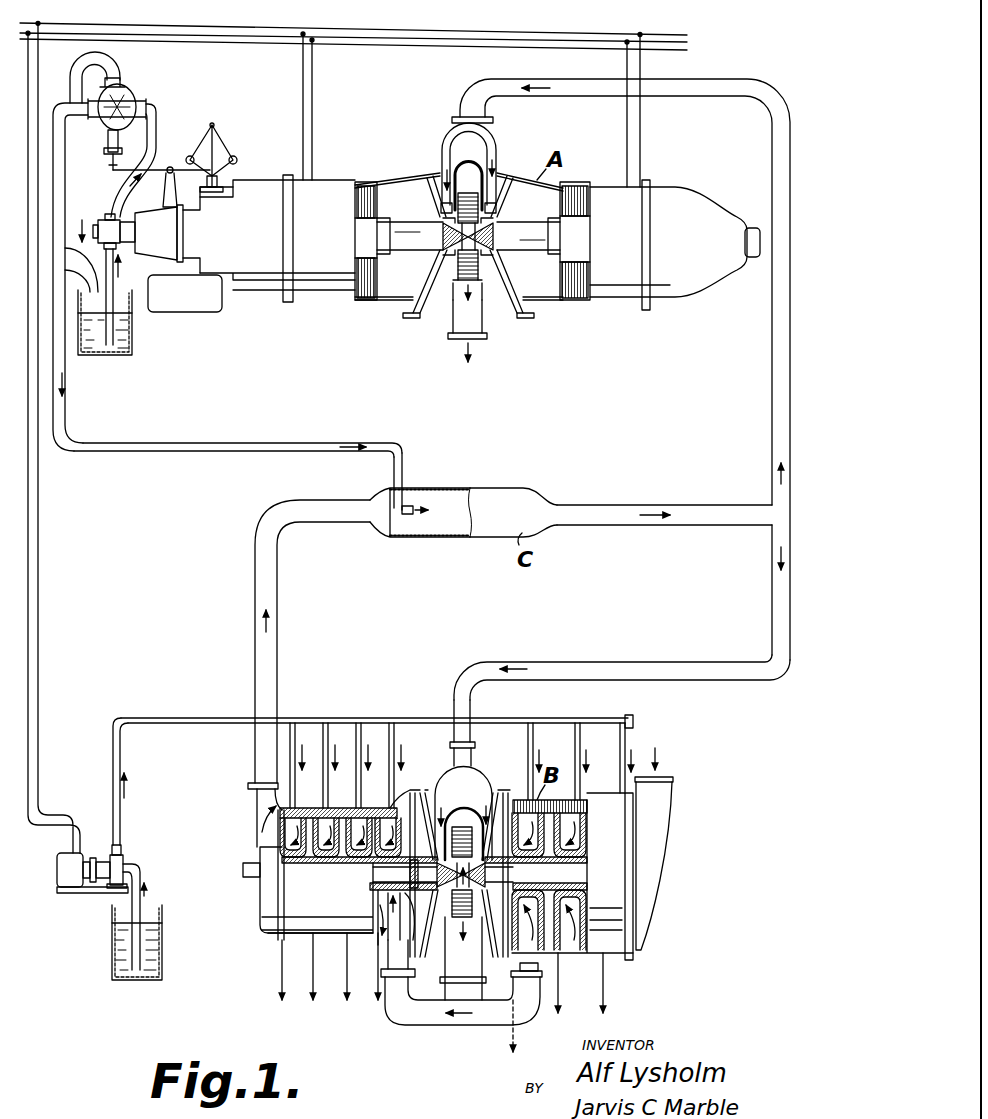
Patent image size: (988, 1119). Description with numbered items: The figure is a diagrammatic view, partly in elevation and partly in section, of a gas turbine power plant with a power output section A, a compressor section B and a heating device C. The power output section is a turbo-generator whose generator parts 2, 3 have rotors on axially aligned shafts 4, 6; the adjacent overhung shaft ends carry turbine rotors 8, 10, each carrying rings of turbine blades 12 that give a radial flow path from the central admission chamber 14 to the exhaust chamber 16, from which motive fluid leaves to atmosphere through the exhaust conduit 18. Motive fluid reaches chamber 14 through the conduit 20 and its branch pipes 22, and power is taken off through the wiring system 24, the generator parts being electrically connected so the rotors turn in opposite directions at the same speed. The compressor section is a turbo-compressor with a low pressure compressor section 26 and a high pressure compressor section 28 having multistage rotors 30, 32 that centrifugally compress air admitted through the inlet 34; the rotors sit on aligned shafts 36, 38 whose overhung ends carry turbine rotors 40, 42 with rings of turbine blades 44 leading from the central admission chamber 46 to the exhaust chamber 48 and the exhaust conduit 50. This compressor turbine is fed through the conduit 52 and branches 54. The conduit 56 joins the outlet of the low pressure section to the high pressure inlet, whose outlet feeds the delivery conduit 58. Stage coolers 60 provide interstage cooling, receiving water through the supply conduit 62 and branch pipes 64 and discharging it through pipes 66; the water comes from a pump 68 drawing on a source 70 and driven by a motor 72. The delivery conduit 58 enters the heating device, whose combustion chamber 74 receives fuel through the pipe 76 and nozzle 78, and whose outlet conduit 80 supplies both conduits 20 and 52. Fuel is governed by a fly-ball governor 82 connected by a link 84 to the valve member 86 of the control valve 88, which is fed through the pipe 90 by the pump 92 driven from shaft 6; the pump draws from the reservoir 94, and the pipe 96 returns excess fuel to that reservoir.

The generator part 2 is at (587, 187).
The generator part 3 is at (363, 183).
The shaft 4 is at (530, 230).
The shaft 6 is at (400, 230).
The turbine rotor 8 is at (482, 272).
The turbine rotor 10 is at (458, 275).
The turbine blades 12 is at (478, 196).
The central admission chamber 14 is at (447, 258).
The exhaust chamber 16 is at (468, 182).
The exhaust conduit 18 is at (458, 323).
The conduit 20 is at (745, 92).
The branch pipes 22 is at (445, 148).
The wiring system 24 is at (465, 36).
The low pressure compressor section 26 is at (596, 800).
The high pressure compressor section 28 is at (355, 934).
The multiple-stage rotor 30 is at (587, 860).
The multiple-stage rotor 32 is at (343, 860).
The inlet 34 is at (667, 778).
The shaft 36 is at (489, 875).
The shaft 38 is at (405, 874).
The turbine rotor 40 is at (483, 794).
The turbine rotor 42 is at (437, 793).
The turbine blades 44 is at (463, 958).
The central admission chamber 46 is at (443, 892).
The exhaust chamber 48 is at (464, 844).
The exhaust conduit 50 is at (460, 980).
The conduit 52 is at (675, 664).
The branches 54 is at (447, 765).
The conduit 56 is at (462, 1024).
The delivery conduit 58 is at (272, 656).
The stage coolers 60 is at (310, 810).
The supply conduit 62 is at (410, 719).
The branch pipes 64 is at (325, 784).
The pipes 66 is at (284, 978).
The pump 68 is at (122, 861).
The source 70 is at (164, 958).
The motor 72 is at (60, 877).
The combustion chamber 74 is at (455, 537).
The pipe 76 is at (254, 443).
The nozzle 78 is at (398, 537).
The conduit 80 is at (655, 507).
The fly-ball governor 82 is at (224, 150).
The link 84 is at (160, 173).
The valve member 86 is at (128, 93).
The control valve 88 is at (120, 130).
The pipe 90 is at (157, 124).
The pump 92 is at (102, 218).
The reservoir 94 is at (133, 347).
The pipe 96 is at (75, 182).